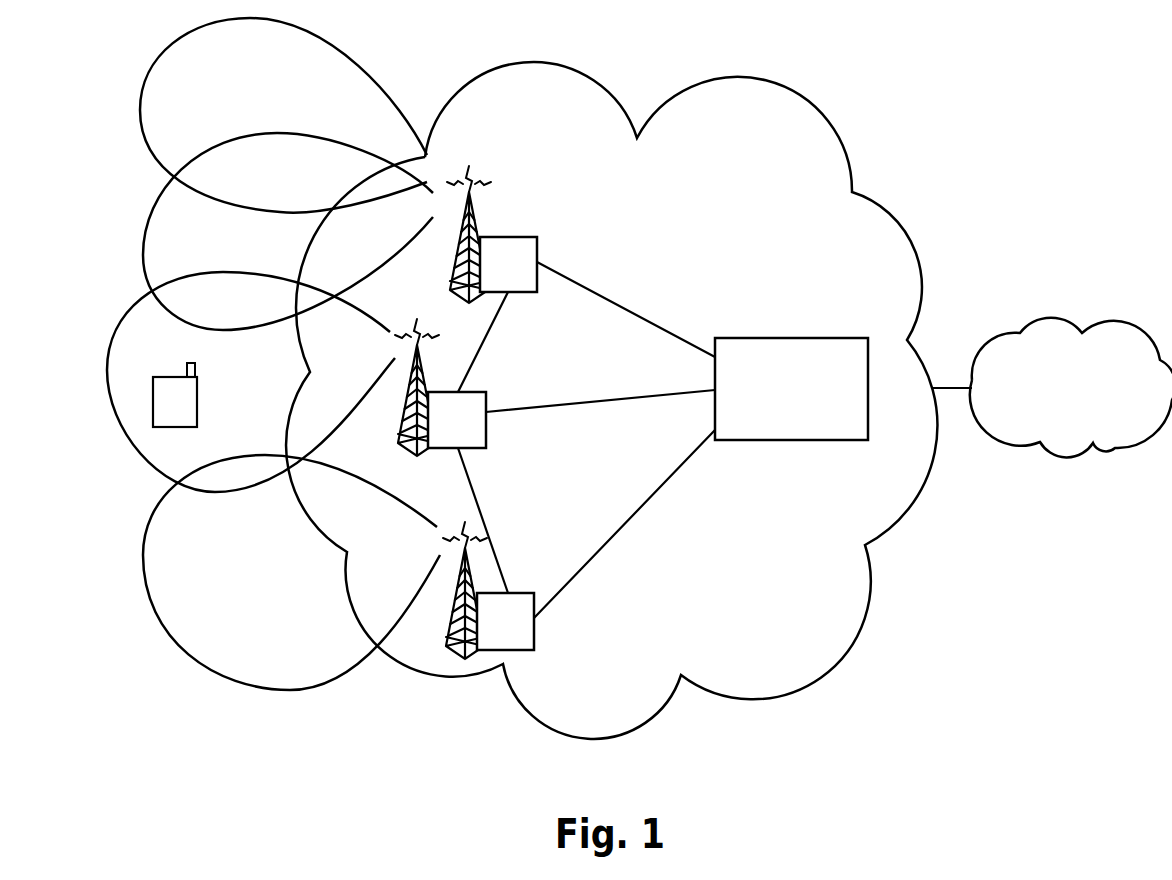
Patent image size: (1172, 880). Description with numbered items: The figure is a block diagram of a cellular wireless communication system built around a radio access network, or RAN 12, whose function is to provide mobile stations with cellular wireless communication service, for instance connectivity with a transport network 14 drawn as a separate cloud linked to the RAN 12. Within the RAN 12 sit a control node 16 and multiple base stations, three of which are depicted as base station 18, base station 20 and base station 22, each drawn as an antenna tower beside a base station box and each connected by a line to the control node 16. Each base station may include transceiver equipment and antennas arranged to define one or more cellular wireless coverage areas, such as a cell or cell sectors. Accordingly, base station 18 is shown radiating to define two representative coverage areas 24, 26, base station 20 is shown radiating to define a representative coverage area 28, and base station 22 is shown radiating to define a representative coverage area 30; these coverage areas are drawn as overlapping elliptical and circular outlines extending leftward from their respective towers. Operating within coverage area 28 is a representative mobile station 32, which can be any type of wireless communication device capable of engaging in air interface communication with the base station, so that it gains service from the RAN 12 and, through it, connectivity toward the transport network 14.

The RAN 12 is at (817, 120).
The transport network 14 is at (1117, 322).
The control node 16 is at (805, 338).
The base station 18 is at (515, 237).
The base station 20 is at (467, 392).
The base station 22 is at (515, 593).
The coverage area 24 is at (140, 108).
The coverage area 26 is at (143, 232).
The coverage area 28 is at (107, 403).
The coverage area 30 is at (145, 578).
The mobile station 32 is at (197, 390).